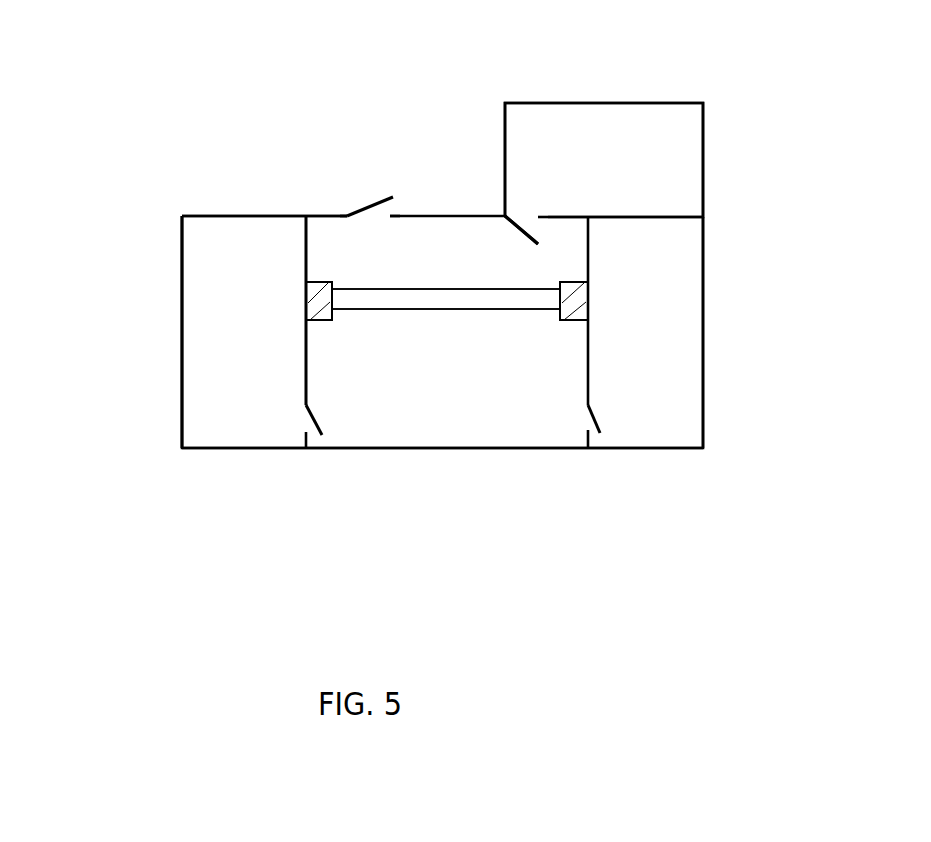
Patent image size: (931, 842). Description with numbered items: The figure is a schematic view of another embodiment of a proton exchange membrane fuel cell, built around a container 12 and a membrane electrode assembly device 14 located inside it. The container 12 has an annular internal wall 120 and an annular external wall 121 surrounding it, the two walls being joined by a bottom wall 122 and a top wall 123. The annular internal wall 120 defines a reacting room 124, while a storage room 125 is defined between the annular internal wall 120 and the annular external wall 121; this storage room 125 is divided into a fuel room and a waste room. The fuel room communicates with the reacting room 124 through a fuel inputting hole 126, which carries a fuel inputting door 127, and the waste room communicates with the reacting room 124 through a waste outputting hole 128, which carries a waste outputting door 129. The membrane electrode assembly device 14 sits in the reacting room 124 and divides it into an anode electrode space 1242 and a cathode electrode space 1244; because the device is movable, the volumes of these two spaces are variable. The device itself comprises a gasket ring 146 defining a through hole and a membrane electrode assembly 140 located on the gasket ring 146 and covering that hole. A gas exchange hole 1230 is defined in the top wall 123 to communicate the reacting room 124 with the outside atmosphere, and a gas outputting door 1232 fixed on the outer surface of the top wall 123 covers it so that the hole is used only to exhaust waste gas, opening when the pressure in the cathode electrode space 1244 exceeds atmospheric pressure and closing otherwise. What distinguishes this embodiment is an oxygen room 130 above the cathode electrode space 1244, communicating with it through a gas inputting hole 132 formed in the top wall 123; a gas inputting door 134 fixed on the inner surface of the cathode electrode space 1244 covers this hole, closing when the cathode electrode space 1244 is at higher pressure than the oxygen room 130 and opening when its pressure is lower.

The container 12 is at (153, 258).
The membrane electrode assembly device 14 is at (447, 320).
The annular internal wall 120 is at (588, 368).
The annular external wall 121 is at (703, 348).
The bottom wall 122 is at (217, 450).
The top wall 123 is at (227, 215).
The reacting room 124 is at (88, 360).
The anode electrode space 1242 is at (345, 382).
The cathode electrode space 1244 is at (325, 255).
The storage room 125 is at (203, 302).
The fuel inputting hole 126 is at (305, 423).
The fuel inputting door 127 is at (322, 427).
The waste outputting hole 128 is at (587, 426).
The waste outputting door 129 is at (600, 428).
The gas exchange hole 1230 is at (373, 217).
The gas outputting door 1232 is at (387, 190).
The oxygen room 130 is at (667, 158).
The gas inputting hole 132 is at (537, 222).
The gas inputting door 134 is at (520, 232).
The membrane electrode assembly 140 is at (397, 300).
The gasket ring 146 is at (580, 300).